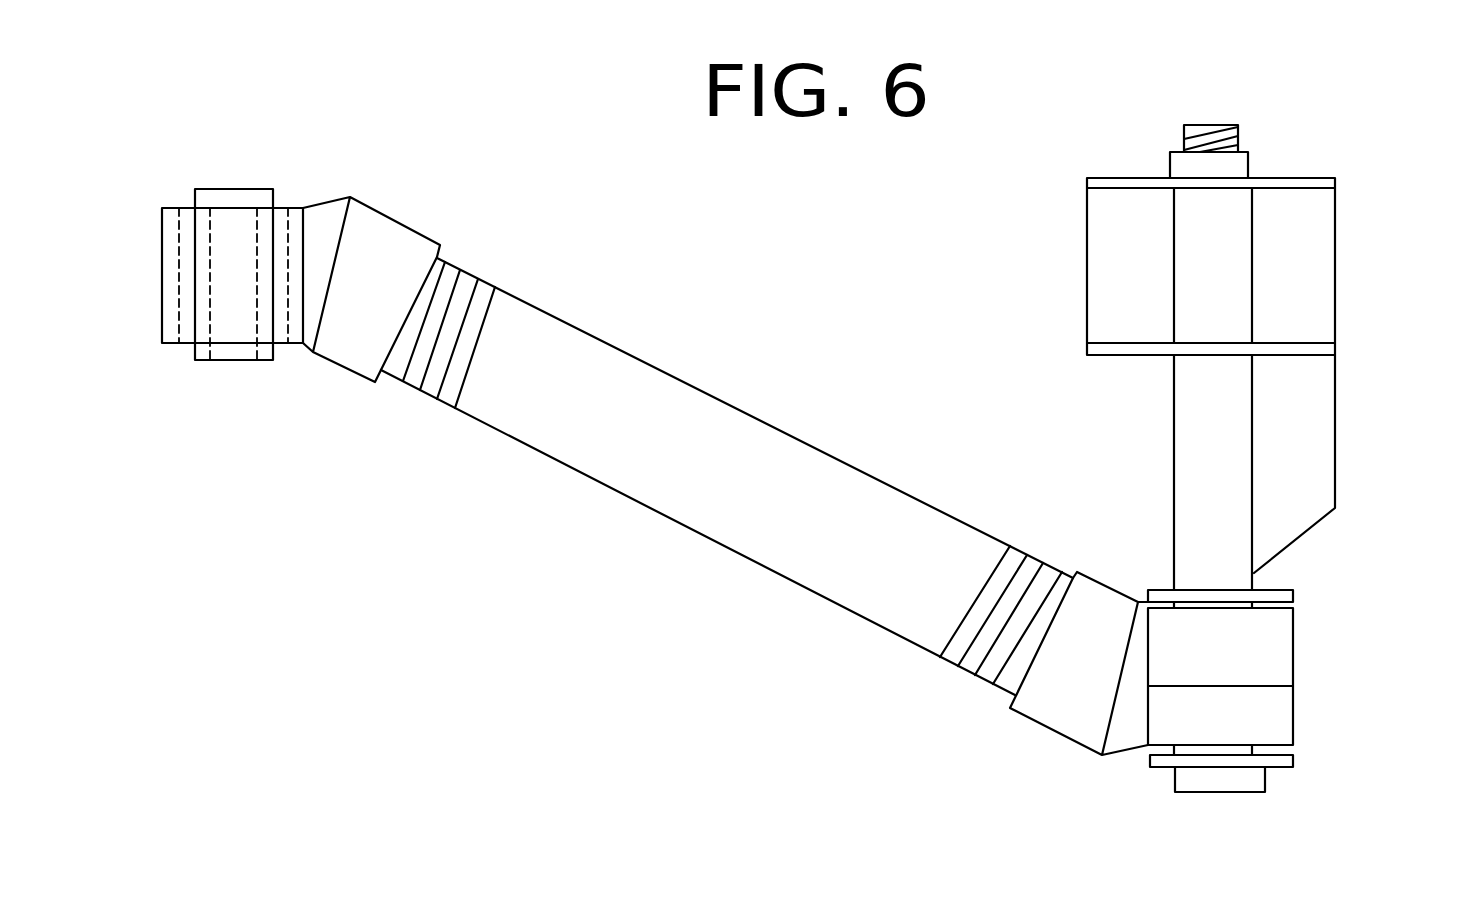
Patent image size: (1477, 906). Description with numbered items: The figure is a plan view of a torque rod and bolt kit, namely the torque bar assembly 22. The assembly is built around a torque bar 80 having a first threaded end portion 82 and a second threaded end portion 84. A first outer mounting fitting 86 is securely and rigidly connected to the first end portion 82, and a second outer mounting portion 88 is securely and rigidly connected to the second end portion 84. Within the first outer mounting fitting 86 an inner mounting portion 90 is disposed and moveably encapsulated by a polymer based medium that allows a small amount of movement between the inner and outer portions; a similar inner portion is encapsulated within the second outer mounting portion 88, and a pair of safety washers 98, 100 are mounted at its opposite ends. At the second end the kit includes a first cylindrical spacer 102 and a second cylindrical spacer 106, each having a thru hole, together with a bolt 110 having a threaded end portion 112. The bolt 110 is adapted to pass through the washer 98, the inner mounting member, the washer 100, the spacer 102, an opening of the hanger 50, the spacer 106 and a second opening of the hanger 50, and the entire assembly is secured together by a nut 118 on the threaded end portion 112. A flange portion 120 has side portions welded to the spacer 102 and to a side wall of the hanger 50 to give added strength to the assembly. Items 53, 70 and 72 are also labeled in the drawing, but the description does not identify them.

The torque bar assembly 22 is at (727, 476).
The hanger 50 is at (1181, 209).
The top plate 53 is at (1143, 185).
The end block 70 is at (177, 208).
The lower housing block 72 is at (1387, 387).
The torque bar 80 is at (762, 560).
The first threaded end portion 82 is at (465, 273).
The second threaded end portion 84 is at (997, 687).
The first outer mounting fitting 86 is at (388, 218).
The second outer mounting portion 88 is at (1060, 737).
The inner mounting portion 90 is at (217, 193).
The safety washer 98 is at (1290, 762).
The safety washer 100 is at (1285, 588).
The first cylindrical spacer 102 is at (1217, 430).
The second cylindrical spacer 106 is at (1213, 267).
The bolt 110 is at (1175, 782).
The threaded end portion 112 is at (1212, 123).
The nut 118 is at (1248, 162).
The flange portion 120 is at (1293, 430).